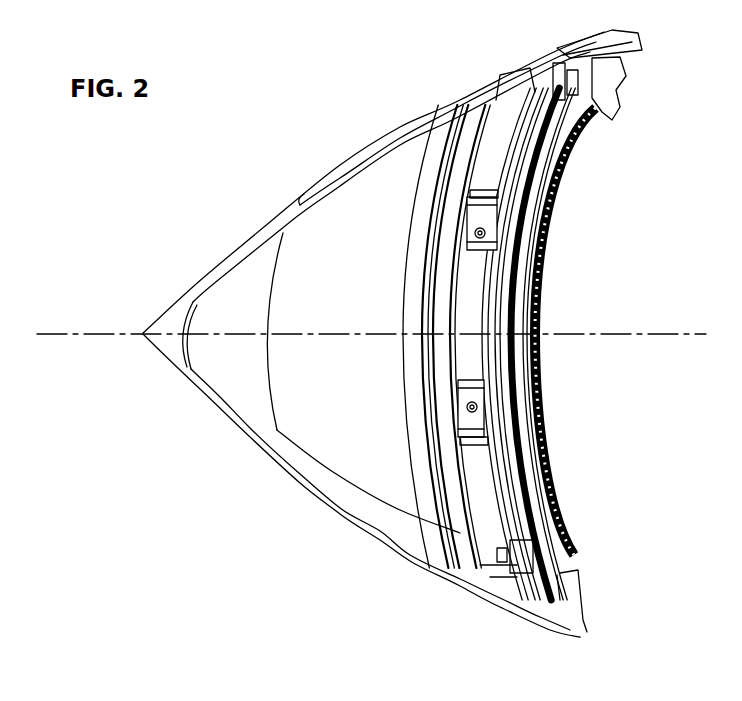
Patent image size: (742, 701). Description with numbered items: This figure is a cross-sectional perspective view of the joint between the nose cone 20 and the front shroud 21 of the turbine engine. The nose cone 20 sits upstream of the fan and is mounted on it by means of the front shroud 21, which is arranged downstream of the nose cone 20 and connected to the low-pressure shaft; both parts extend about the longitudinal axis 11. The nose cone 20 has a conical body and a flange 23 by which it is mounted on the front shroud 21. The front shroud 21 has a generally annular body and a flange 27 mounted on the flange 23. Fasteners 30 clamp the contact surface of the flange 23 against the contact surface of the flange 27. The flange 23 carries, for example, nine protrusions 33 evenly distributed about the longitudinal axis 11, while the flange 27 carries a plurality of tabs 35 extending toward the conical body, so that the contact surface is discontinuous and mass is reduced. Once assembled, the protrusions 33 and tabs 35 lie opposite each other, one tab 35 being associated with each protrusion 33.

The longitudinal axis 11 is at (644, 334).
The nose cone 20 is at (346, 156).
The front shroud 21 is at (621, 55).
The flange 23 is at (492, 148).
The flange 27 is at (497, 277).
The fasteners 30 is at (480, 230).
The protrusions 33 is at (479, 202).
The tabs 35 is at (485, 212).